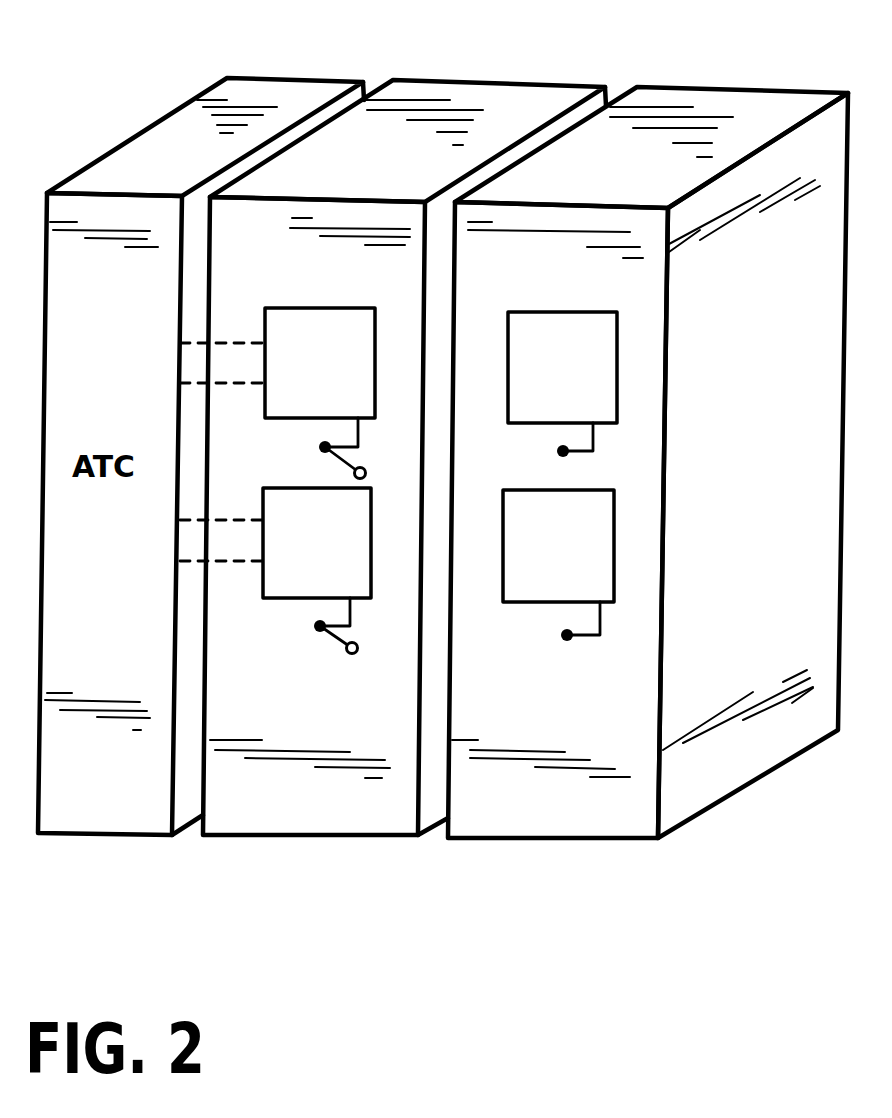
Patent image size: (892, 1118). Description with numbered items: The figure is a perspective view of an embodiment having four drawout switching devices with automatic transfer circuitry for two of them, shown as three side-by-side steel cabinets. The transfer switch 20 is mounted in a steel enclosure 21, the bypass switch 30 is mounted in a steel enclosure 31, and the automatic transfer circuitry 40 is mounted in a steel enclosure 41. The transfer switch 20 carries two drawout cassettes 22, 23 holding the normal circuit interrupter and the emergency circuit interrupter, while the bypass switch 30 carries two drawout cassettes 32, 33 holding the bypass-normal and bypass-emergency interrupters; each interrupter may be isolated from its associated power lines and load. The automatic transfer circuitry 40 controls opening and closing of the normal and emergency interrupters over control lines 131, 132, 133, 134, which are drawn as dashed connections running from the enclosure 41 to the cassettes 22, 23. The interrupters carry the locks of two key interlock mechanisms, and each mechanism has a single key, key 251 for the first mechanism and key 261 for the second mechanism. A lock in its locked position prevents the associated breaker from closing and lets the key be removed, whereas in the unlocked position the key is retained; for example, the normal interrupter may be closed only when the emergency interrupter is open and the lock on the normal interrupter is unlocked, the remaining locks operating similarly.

The transfer switch 20 is at (340, 891).
The steel enclosure 21 is at (470, 95).
The drawout cassette 22 is at (326, 307).
The drawout cassette 23 is at (371, 557).
The key 251 is at (365, 469).
The key 261 is at (346, 651).
The bypass switch 30 is at (575, 893).
The steel enclosure 31 is at (688, 97).
The drawout cassette 32 is at (573, 310).
The drawout cassette 33 is at (617, 545).
The automatic transfer circuitry 40 is at (143, 890).
The steel enclosure 41 is at (268, 87).
The control line 131 is at (226, 342).
The control line 132 is at (230, 385).
The control line 133 is at (230, 520).
The control line 134 is at (232, 562).